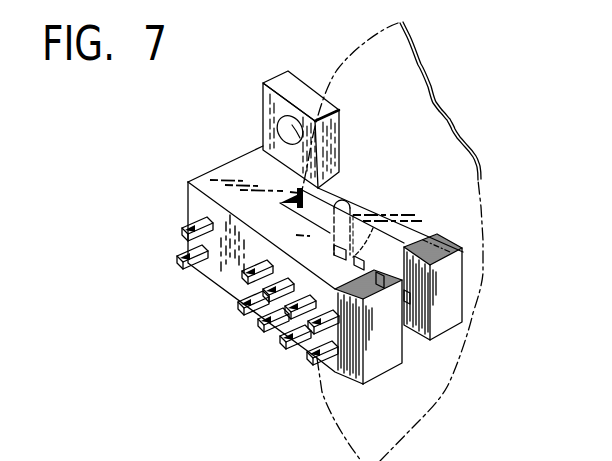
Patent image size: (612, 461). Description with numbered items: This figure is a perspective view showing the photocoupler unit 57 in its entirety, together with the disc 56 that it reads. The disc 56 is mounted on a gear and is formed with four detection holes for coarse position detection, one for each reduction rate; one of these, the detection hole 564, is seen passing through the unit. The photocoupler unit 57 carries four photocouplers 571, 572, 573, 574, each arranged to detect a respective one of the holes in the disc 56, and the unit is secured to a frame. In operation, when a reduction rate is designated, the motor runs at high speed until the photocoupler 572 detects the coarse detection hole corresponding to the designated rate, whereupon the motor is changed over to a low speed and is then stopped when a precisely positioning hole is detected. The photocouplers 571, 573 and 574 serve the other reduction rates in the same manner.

The disc 56 is at (322, 389).
The photocoupler unit 57 is at (354, 227).
The detection hole 564 is at (347, 197).
The photocoupler 571 is at (405, 294).
The photocoupler 572 is at (450, 242).
The photocoupler 573 is at (403, 226).
The photocoupler 574 is at (372, 218).